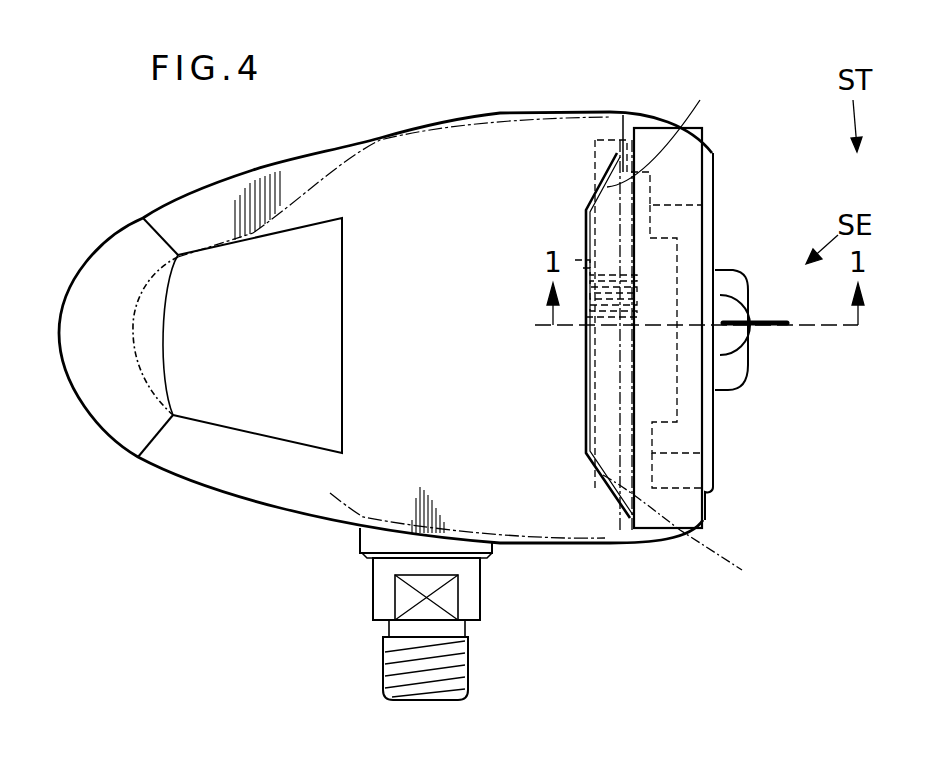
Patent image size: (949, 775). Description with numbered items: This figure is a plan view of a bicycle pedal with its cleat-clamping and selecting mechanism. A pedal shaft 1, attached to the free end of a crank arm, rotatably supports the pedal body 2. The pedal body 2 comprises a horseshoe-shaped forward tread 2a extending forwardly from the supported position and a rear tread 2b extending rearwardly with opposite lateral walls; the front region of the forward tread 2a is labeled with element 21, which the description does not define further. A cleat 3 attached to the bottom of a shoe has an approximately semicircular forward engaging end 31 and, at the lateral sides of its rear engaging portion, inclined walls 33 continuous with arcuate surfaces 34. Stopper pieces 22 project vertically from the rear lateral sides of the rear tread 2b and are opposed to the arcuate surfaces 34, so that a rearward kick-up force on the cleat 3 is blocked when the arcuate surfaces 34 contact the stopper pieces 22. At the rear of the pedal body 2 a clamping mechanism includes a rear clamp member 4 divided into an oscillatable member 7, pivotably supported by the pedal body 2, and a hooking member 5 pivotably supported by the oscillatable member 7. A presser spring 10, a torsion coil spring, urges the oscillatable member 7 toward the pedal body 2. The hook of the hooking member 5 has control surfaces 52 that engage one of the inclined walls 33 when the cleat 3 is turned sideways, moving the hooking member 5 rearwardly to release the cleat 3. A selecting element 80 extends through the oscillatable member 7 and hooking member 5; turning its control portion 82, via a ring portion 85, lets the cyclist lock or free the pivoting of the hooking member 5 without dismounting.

The pedal shaft 1 is at (378, 592).
The pedal body 2 is at (507, 112).
The forward tread 2a is at (218, 478).
The rear tread 2b is at (545, 503).
The cleat 3 is at (438, 152).
The rear clamp member 4 is at (777, 152).
The hooking member 5 is at (690, 157).
The oscillatable member 7 is at (715, 212).
The presser spring 10 is at (640, 270).
The lens front face 21 is at (150, 320).
The stopper pieces 22 is at (637, 120).
The forward engaging end 31 is at (143, 374).
The inclined walls 33 is at (691, 328).
The arcuate surfaces 34 is at (627, 153).
The control surfaces 52 is at (590, 207).
The selecting element 80 is at (750, 302).
The control portion 82 is at (733, 367).
The ring portion 85 is at (780, 330).